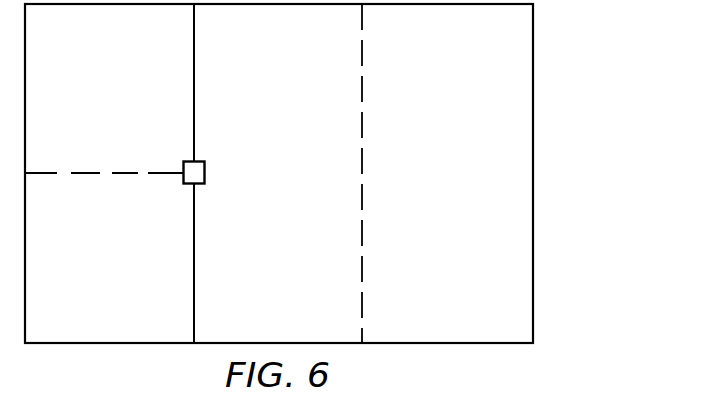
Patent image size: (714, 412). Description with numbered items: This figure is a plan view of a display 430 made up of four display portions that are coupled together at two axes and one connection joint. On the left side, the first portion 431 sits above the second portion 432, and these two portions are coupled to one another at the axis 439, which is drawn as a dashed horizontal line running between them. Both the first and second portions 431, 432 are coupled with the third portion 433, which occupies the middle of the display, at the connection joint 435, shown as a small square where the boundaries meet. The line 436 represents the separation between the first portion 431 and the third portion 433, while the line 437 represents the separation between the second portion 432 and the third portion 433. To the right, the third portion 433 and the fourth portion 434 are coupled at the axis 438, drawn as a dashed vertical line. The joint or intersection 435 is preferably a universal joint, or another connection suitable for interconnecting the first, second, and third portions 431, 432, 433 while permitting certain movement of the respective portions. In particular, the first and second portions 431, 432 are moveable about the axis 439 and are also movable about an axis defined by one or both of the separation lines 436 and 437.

The display 430 is at (534, 73).
The first portion 431 is at (129, 98).
The second portion 432 is at (129, 269).
The third portion 433 is at (298, 185).
The fourth portion 434 is at (467, 185).
The connection joint 435 is at (199, 160).
The separation line 436 is at (194, 84).
The separation line 437 is at (194, 262).
The axis 438 is at (362, 262).
The axis 439 is at (104, 172).